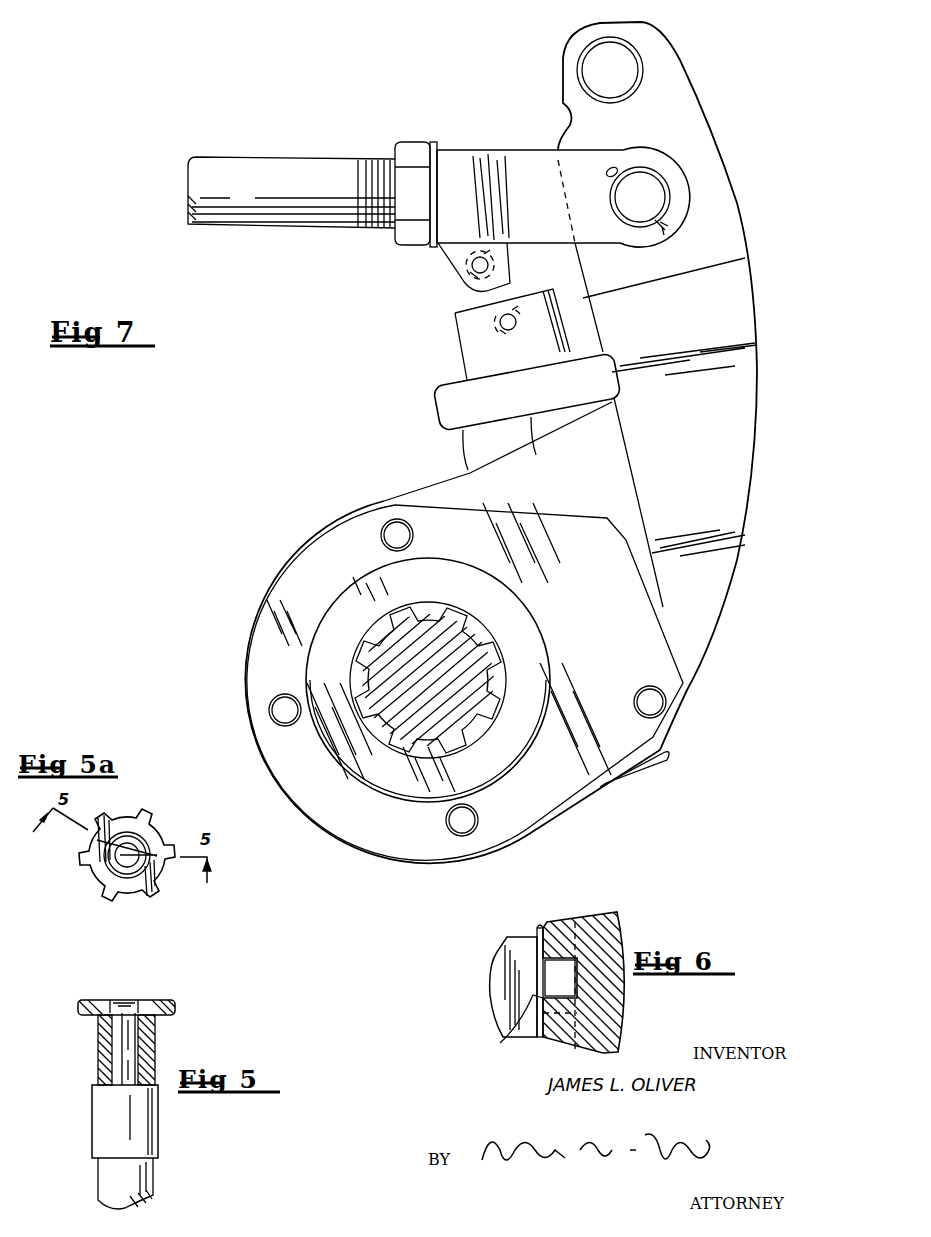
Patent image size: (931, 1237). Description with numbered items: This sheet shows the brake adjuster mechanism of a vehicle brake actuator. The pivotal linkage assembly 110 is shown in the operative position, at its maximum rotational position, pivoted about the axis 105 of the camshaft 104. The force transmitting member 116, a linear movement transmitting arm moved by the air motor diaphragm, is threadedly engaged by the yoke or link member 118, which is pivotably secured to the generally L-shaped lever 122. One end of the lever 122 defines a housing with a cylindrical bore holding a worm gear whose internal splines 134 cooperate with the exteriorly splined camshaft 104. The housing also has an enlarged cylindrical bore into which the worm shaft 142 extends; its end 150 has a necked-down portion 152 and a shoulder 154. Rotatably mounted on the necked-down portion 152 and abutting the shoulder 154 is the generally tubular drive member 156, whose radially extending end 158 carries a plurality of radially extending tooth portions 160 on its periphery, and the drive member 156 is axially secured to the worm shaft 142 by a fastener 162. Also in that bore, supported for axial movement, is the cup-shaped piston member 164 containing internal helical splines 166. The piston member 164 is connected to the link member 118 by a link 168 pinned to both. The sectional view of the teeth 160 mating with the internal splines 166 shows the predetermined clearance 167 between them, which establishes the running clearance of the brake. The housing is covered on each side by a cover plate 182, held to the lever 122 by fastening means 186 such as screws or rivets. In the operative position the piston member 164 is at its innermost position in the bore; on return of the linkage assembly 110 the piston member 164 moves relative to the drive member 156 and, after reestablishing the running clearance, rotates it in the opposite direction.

In FIG. 7, the camshaft 104 is at (487, 667).
In FIG. 7, the axis 105 is at (428, 680).
In FIG. 7, the linkage assembly 110 is at (712, 628).
In FIG. 7, the force transmitting member 116 is at (288, 158).
In FIG. 7, the link member 118 is at (500, 160).
In FIG. 7, the lever 122 is at (687, 424).
In FIG. 7, the internal splines 134 is at (500, 708).
In FIG. 5, the worm shaft 142 is at (118, 1087).
In FIG. 5, the end of the worm shaft 150 is at (105, 1108).
In FIG. 5, the necked-down portion 152 is at (130, 1057).
In FIG. 5, the shoulder 154 is at (98, 1077).
In FIG. 5a, the tubular drive member 156 is at (166, 825).
In FIG. 5, the tubular drive member 156 is at (100, 1040).
In FIG. 6, the tubular drive member 156 is at (484, 991).
In FIG. 5a, the end of the tubular drive member 158 is at (98, 870).
In FIG. 5, the end of the tubular drive member 158 is at (160, 1005).
In FIG. 6, the end of the tubular drive member 158 is at (546, 935).
In FIG. 5a, the tooth portions 160 is at (150, 897).
In FIG. 5, the fastener 162 is at (110, 1005).
In FIG. 7, the piston member 164 is at (470, 347).
In FIG. 6, the piston member 164 is at (620, 918).
In FIG. 6, the internal helical splines 166 is at (570, 1025).
In FIG. 6, the clearance 167 is at (505, 1040).
In FIG. 7, the link 168 is at (480, 298).
In FIG. 7, the cover plate 182 is at (544, 824).
In FIG. 7, the fastening means 186 is at (270, 710).